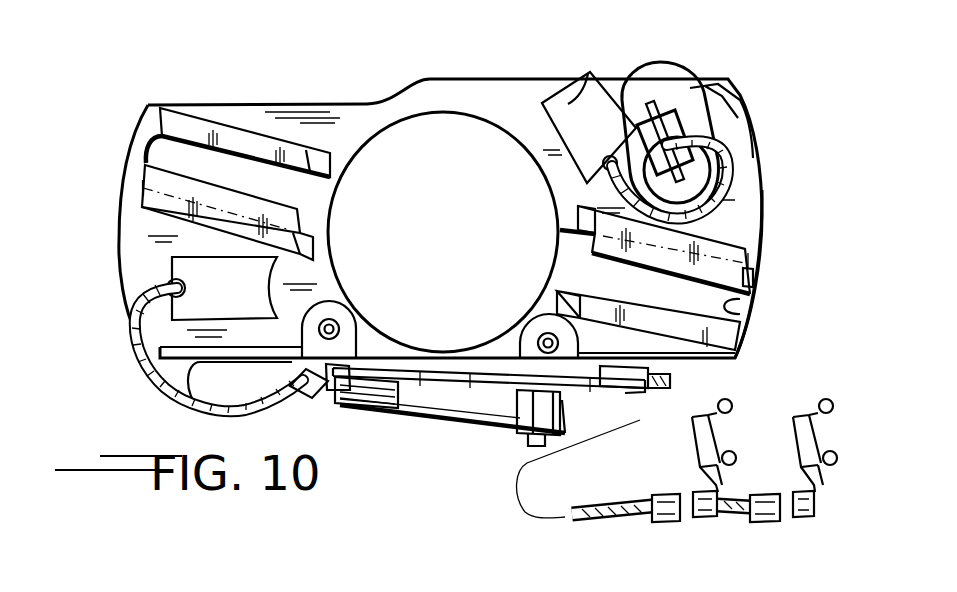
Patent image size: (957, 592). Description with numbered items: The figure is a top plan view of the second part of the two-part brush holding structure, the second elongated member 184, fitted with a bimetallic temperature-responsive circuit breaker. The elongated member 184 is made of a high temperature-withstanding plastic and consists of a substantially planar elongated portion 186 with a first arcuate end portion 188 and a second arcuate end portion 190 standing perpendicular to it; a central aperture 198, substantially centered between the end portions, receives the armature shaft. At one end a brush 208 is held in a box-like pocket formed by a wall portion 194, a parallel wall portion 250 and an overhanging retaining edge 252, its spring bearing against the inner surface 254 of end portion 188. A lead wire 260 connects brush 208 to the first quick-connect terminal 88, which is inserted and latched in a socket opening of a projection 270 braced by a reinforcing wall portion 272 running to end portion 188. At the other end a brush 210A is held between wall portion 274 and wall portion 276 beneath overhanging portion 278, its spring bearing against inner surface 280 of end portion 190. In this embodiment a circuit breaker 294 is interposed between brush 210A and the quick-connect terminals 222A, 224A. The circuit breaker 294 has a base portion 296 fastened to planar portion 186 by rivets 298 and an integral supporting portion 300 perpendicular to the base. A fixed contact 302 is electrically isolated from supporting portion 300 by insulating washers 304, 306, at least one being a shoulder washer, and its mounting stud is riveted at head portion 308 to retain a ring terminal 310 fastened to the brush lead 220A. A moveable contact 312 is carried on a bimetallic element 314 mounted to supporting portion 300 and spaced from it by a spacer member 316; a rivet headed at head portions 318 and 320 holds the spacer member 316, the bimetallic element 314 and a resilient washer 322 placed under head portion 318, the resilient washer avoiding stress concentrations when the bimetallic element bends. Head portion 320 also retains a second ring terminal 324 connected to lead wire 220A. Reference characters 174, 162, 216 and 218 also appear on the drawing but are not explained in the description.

The housing portion 174 is at (395, 33).
The housing 162 is at (440, 204).
The second elongated member 184 is at (440, 204).
The planar elongated portion 186 is at (443, 192).
The first arcuate end portion 188 is at (763, 178).
The second arcuate end portion 190 is at (140, 158).
The wall portion 194 is at (695, 313).
The central aperture 198 is at (561, 91).
The brush 208 is at (588, 100).
The brush 210A is at (255, 301).
The cell end contact 216 is at (760, 276).
The cell axis 218 is at (140, 188).
The brush lead 220A is at (155, 382).
The quick-connect terminal 222A is at (735, 412).
The quick-connect terminal 224A is at (835, 438).
The wall portion 250 is at (706, 250).
The retaining edge 252 is at (706, 250).
The inner surface 254 is at (741, 308).
The lead wire 260 is at (737, 141).
The projection 270 is at (662, 97).
The reinforcing wall portion 272 is at (705, 88).
The first quick-connect terminal 88 is at (640, 127).
The wall portion 274 is at (230, 143).
The wall portion 276 is at (189, 213).
The overhanging portion 278 is at (190, 213).
The inner surface 280 is at (168, 138).
The circuit breaker 294 is at (479, 419).
The base portion 296 is at (507, 357).
The rivets 298 is at (468, 288).
The supporting portion 300 is at (489, 396).
The fixed contact 302 is at (284, 409).
The insulating washer 304 is at (376, 423).
The insulating washer 306 is at (400, 388).
The head portion 308 is at (468, 317).
The ring terminal 310 is at (290, 375).
The moveable contact 312 is at (284, 409).
The bimetallic element 314 is at (417, 420).
The spacer member 316 is at (575, 442).
The head portion 318 is at (533, 447).
The head portion 320 is at (574, 344).
The resilient washer 322 is at (530, 442).
The ring terminal 324 is at (655, 366).